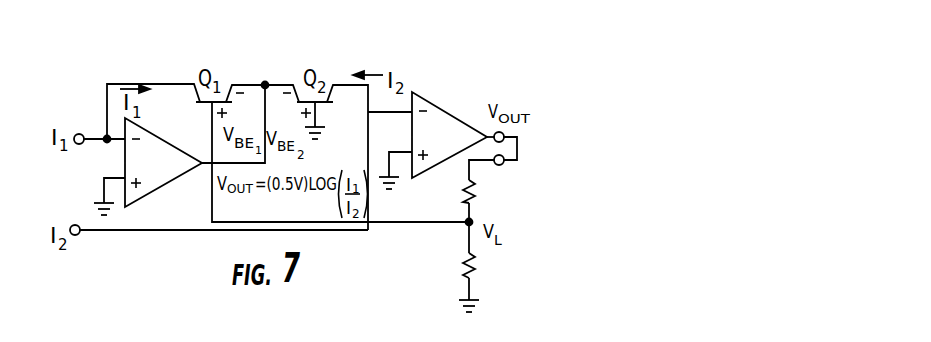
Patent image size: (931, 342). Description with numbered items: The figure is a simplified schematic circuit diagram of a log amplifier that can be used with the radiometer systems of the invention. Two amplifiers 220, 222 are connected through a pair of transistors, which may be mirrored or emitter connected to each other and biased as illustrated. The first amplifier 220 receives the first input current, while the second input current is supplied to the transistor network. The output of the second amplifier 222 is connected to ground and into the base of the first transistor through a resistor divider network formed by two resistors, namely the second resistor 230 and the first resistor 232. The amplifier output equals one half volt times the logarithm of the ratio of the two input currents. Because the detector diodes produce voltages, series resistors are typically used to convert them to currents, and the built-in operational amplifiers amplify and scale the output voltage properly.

The amplifier 220 is at (125, 155).
The second amplifier 222 is at (447, 110).
The resistor R2 230 is at (477, 186).
The resistor R1 232 is at (478, 257).